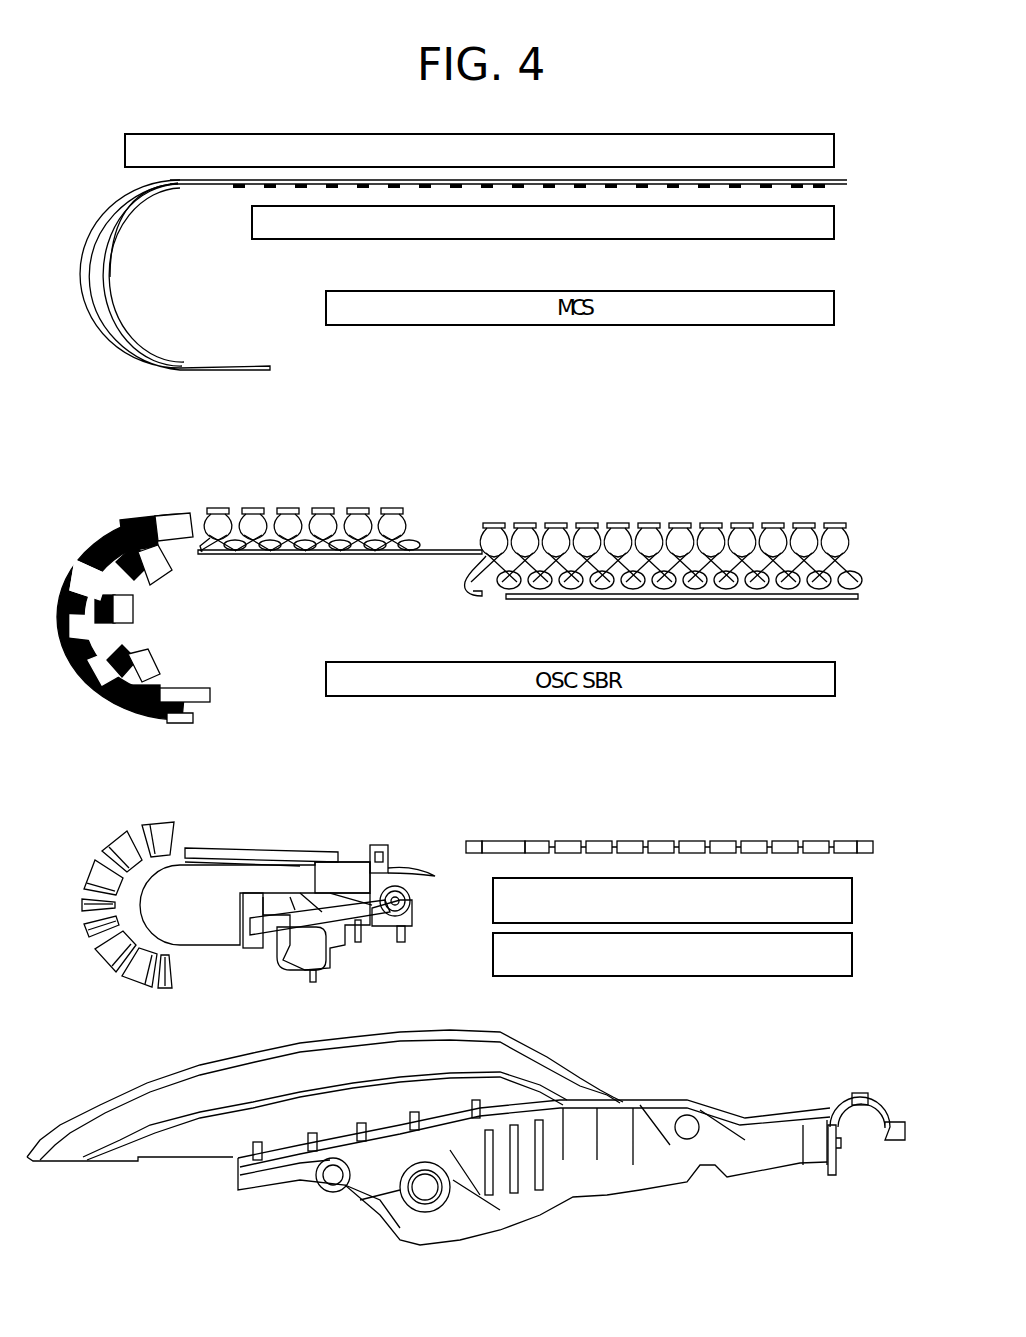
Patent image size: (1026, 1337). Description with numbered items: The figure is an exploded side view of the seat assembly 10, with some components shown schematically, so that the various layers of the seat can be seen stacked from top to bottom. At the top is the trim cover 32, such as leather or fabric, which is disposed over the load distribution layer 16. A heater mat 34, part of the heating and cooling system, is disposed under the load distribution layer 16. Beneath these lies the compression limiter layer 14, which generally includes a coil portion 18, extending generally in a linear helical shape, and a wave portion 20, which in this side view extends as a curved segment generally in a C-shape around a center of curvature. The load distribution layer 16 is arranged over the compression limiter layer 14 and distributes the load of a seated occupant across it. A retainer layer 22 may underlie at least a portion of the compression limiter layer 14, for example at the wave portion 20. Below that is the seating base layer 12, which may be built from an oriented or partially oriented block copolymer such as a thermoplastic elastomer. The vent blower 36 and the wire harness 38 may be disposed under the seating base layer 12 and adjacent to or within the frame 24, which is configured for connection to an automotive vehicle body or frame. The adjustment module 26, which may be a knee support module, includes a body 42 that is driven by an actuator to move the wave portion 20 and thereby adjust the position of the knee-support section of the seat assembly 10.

The seat assembly 10 is at (90, 74).
The seating base layer 12 is at (862, 843).
The compression limiter layer 14 is at (90, 668).
The load distribution layer 16 is at (95, 272).
The coil portion 18 is at (850, 548).
The wave portion 20 is at (87, 572).
The retainer layer 22 is at (236, 908).
The frame 24 is at (838, 1152).
The adjustment module 26 is at (232, 918).
The trim cover 32 is at (748, 140).
The heater mat 34 is at (813, 220).
The vent blower 36 is at (840, 898).
The wire harness 38 is at (840, 950).
The body 42 is at (175, 888).